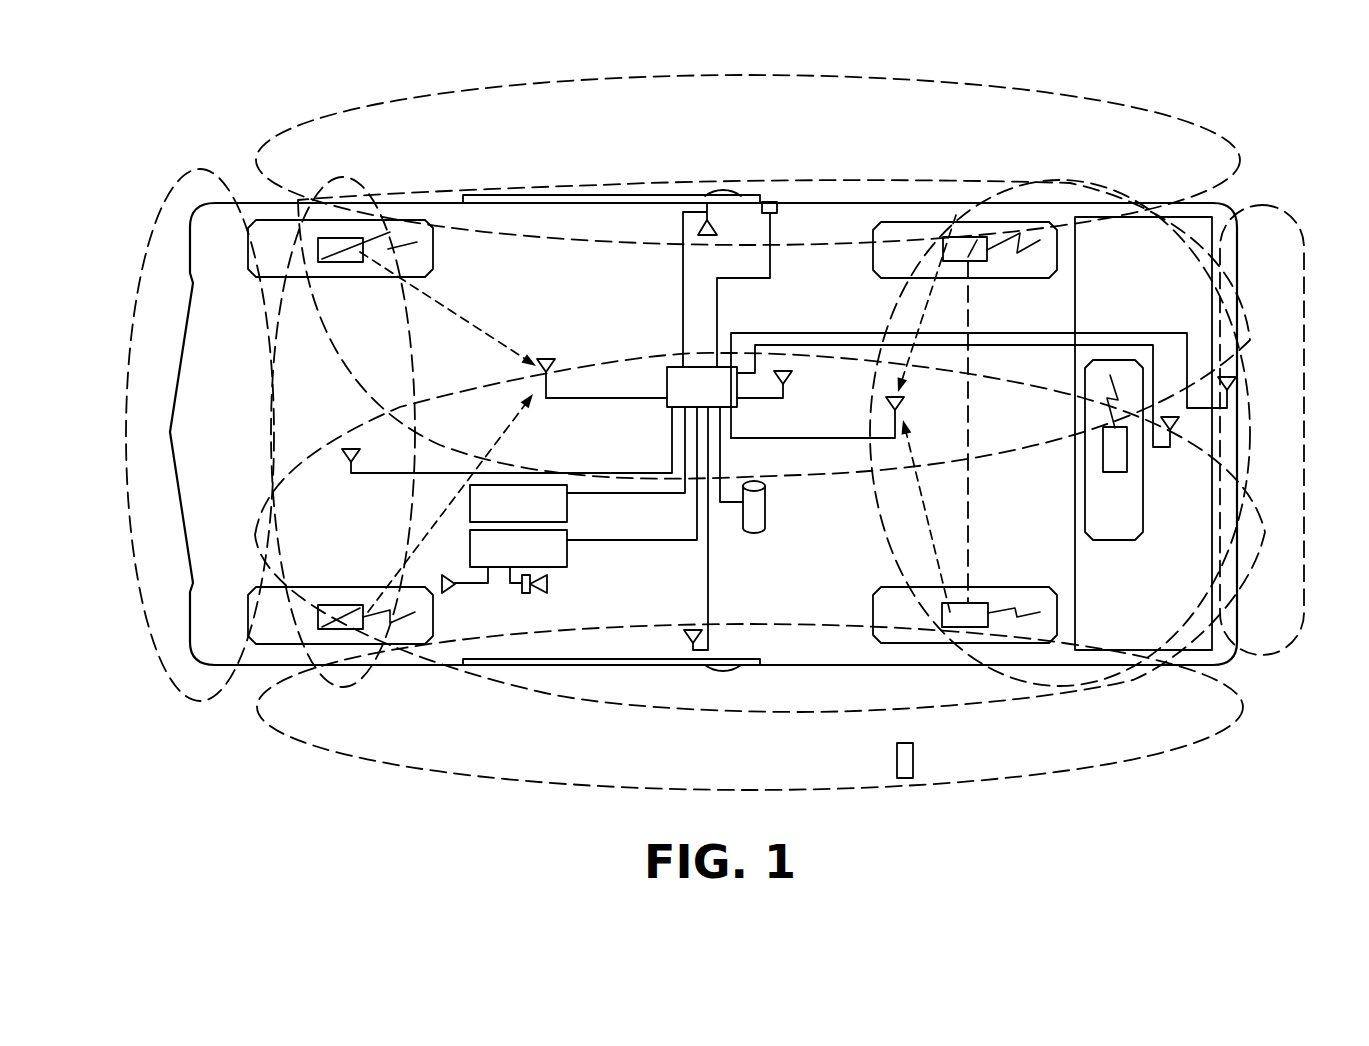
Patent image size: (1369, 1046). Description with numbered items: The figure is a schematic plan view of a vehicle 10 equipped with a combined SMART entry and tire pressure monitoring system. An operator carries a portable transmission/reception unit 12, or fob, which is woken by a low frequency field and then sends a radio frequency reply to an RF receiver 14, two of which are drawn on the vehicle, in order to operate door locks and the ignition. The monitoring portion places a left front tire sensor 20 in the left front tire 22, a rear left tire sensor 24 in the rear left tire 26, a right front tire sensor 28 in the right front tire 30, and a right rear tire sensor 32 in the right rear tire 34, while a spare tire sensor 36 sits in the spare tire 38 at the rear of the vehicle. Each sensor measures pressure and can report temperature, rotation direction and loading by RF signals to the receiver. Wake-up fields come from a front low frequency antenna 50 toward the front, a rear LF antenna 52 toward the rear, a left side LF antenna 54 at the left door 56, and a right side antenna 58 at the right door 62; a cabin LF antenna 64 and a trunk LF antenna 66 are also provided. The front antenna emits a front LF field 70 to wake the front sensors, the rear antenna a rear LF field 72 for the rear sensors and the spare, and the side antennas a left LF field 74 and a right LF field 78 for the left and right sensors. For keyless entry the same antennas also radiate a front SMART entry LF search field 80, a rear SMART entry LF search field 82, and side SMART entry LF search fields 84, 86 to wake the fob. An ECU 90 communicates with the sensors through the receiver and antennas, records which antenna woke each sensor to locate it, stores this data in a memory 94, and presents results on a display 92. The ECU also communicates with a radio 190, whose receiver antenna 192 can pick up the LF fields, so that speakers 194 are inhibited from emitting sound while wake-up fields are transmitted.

The vehicle 10 is at (1095, 68).
The portable transmission/reception unit 12 is at (915, 755).
The RF receiver 14 is at (546, 358).
The left front tire sensor 20 is at (350, 605).
The left front tire 22 is at (320, 594).
The rear left tire sensor 24 is at (985, 605).
The rear left tire 26 is at (944, 594).
The right front tire sensor 28 is at (348, 262).
The right front tire 30 is at (319, 270).
The right rear tire sensor 32 is at (987, 260).
The right rear tire 34 is at (944, 271).
The spare tire sensor 36 is at (1127, 465).
The spare tire 38 is at (1111, 433).
The front low frequency antenna 50 is at (350, 447).
The rear LF antenna 52 is at (1237, 385).
The left side LF antenna 54 is at (687, 637).
The left door 56 is at (650, 668).
The right side antenna 58 is at (717, 233).
The right door 62 is at (652, 196).
The cabin LF antenna 64 is at (793, 377).
The trunk LF antenna 66 is at (1180, 425).
The front LF field 70 is at (272, 396).
The rear LF field 72 is at (1067, 182).
The left LF field 74 is at (578, 702).
The right LF field 78 is at (763, 182).
The front SMART entry LF search field 80 is at (212, 167).
The rear SMART entry LF search field 82 is at (1268, 655).
The SMART entry LF search field 84 is at (878, 790).
The SMART entry LF search field 86 is at (700, 73).
The ECU 90 is at (665, 377).
The display 92 is at (570, 508).
The memory 94 is at (768, 505).
The radio 190 is at (570, 556).
The receiver antenna 192 is at (445, 590).
The speakers 194 is at (550, 585).